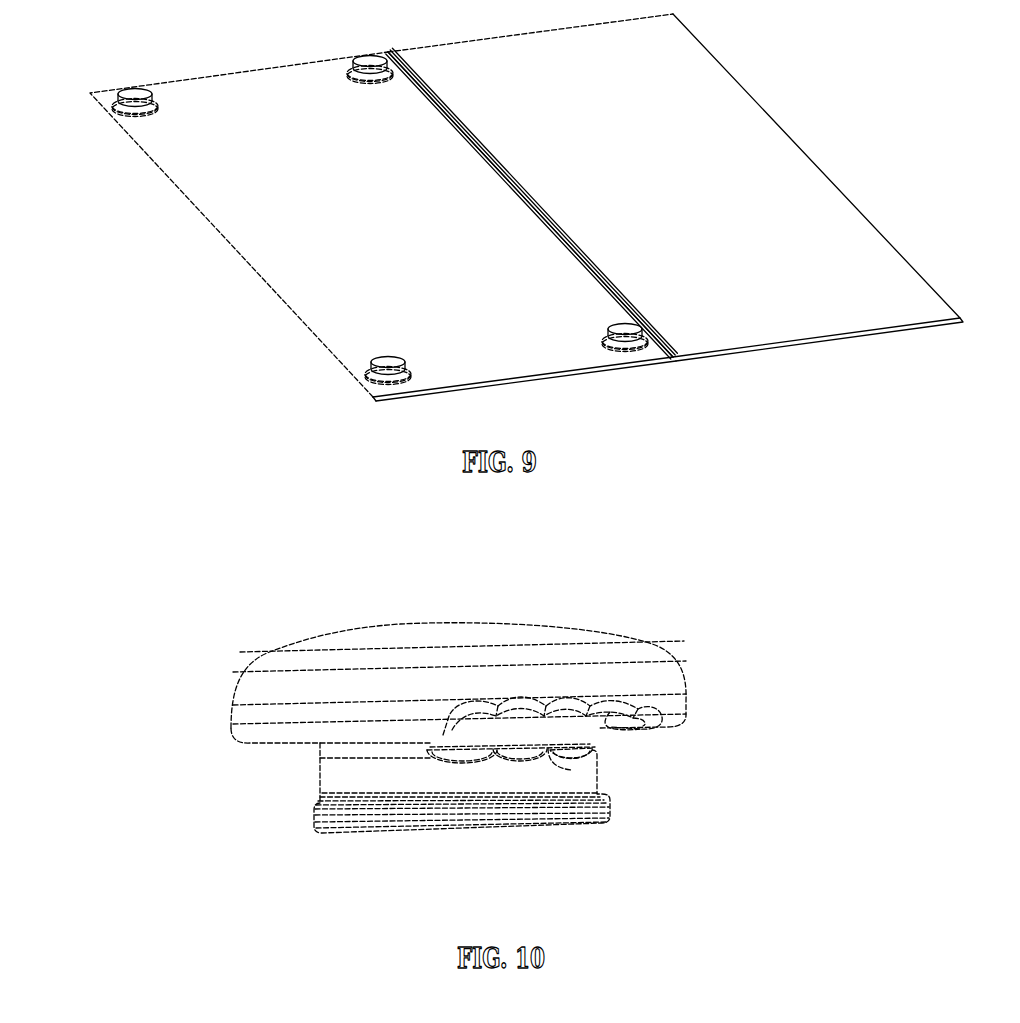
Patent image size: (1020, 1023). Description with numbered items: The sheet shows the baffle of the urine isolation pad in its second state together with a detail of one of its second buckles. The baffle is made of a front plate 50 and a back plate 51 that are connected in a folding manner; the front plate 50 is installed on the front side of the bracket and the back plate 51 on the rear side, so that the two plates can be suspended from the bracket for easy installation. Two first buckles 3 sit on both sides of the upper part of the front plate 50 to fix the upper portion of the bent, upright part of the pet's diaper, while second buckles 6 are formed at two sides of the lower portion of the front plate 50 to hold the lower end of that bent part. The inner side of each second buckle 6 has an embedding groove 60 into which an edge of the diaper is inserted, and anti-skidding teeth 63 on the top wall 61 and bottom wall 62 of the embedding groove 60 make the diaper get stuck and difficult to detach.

In FIG. 9, the first buckle 3 is at (365, 57).
In FIG. 9, the second buckle 6 is at (133, 93).
In FIG. 9, the front plate 50 is at (297, 272).
In FIG. 9, the back plate 51 is at (785, 165).
In FIG. 10, the embedding groove 60 is at (580, 735).
In FIG. 10, the top wall 61 is at (565, 693).
In FIG. 10, the bottom wall 62 is at (550, 768).
In FIG. 10, the anti-skidding teeth 63 is at (505, 757).